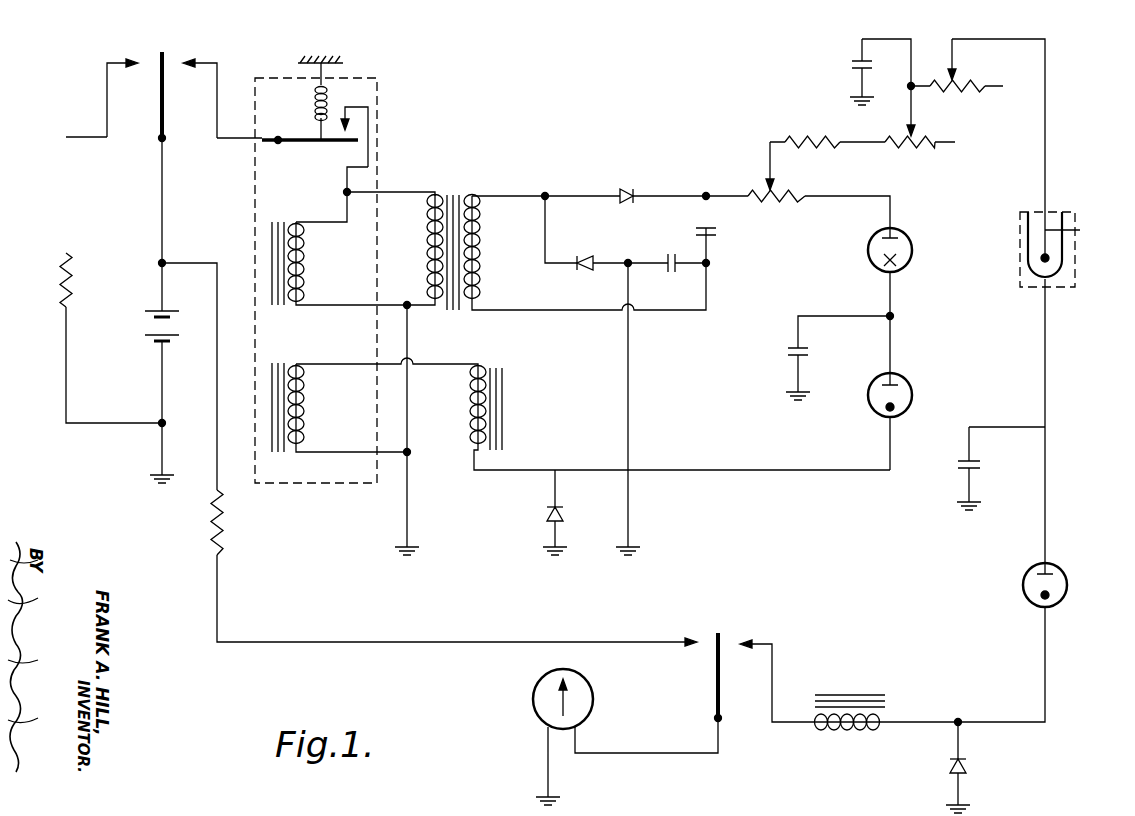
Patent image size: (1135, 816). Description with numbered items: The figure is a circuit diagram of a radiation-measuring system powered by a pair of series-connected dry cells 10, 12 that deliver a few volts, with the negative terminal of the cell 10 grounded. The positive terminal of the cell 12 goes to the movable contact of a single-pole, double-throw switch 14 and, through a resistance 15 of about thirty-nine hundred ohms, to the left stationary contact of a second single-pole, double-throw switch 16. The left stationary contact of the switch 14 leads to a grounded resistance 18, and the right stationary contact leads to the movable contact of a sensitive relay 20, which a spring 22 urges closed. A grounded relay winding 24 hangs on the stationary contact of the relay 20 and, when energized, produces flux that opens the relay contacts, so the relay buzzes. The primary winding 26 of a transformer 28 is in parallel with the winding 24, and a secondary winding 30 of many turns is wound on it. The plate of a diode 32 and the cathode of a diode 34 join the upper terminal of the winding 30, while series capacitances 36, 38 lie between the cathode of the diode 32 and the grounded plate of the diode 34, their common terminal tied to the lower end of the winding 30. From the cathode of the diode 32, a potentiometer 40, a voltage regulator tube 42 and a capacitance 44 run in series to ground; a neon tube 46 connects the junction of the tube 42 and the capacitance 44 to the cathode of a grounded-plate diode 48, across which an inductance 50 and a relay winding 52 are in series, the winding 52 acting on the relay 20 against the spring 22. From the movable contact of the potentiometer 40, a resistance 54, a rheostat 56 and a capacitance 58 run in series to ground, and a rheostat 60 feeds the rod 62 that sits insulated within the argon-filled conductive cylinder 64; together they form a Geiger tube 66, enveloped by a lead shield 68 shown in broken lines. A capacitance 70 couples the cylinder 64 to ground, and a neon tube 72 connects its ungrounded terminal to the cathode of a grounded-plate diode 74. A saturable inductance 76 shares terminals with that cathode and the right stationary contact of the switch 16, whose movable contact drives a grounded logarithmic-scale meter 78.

The dry cell 10 is at (168, 343).
The dry cell 12 is at (146, 311).
The single-pole, double-throw switch 14 is at (175, 60).
The resistance 15 is at (212, 523).
The single-pole, double-throw switch 16 is at (745, 640).
The resistance 18 is at (62, 286).
The relay 20 is at (303, 145).
The spring 22 is at (314, 98).
The relay winding 24 is at (296, 218).
The primary winding 26 is at (436, 192).
The transformer 28 is at (453, 193).
The secondary winding 30 is at (476, 193).
The diode 32 is at (626, 189).
The diode 34 is at (585, 256).
The capacitance 36 is at (717, 232).
The capacitance 38 is at (669, 254).
The potentiometer 40 is at (797, 204).
The voltage regulator tube 42 is at (913, 239).
The capacitance 44 is at (787, 352).
The neon tube 46 is at (913, 386).
The diode 48 is at (545, 515).
The inductance 50 is at (481, 364).
The relay winding 52 is at (296, 455).
The resistance 54 is at (820, 149).
The rheostat 56 is at (912, 149).
The capacitance 58 is at (850, 64).
The rheostat 60 is at (963, 93).
The rod 62 is at (1080, 231).
The conductive cylinder 64 is at (1062, 276).
The Geiger tube 66 is at (1012, 270).
The lead shield 68 is at (1076, 256).
The capacitance 70 is at (957, 464).
The neon tube 72 is at (1023, 594).
The diode 74 is at (968, 768).
The inductance 76 is at (888, 716).
The meter 78 is at (533, 702).